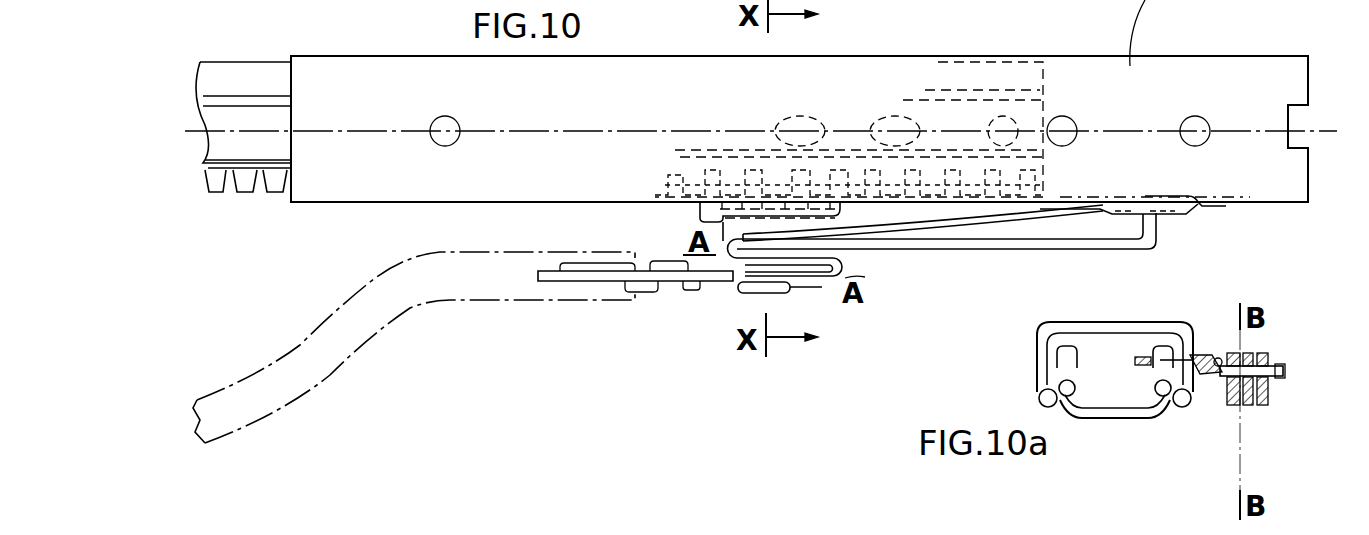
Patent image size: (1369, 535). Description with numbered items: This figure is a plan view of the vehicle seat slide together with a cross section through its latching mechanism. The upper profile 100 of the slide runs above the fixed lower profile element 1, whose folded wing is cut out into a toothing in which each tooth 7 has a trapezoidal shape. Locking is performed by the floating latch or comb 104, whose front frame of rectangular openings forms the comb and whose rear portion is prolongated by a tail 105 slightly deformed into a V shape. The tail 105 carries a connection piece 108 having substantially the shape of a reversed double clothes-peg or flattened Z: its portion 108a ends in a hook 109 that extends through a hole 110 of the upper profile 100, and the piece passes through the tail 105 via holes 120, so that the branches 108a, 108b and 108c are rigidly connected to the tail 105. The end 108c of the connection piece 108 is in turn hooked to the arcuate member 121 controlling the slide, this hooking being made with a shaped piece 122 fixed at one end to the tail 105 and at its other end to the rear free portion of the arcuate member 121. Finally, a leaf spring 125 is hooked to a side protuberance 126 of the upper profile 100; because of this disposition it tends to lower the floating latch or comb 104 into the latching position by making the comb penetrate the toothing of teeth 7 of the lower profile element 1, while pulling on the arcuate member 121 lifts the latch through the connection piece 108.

In FIG. 10, the fixed lower profile element 1 is at (253, 118).
In FIG. 10, the tooth 7 is at (250, 195).
In FIG. 10a, the upper profile 100 is at (1178, 322).
In FIG. 10, the floating latch or comb 104 is at (700, 213).
In FIG. 10a, the floating latch or comb 104 is at (1200, 355).
In FIG. 10, the tail 105 is at (825, 296).
In FIG. 10a, the tail 105 is at (1285, 371).
In FIG. 10, the connection piece 108 is at (1048, 248).
In FIG. 10a, the connection piece 108 is at (1225, 385).
In FIG. 10, the branch of connection piece 108a is at (1145, 241).
In FIG. 10, the branch of connection piece 108b is at (853, 266).
In FIG. 10a, the branch of connection piece 108b is at (1245, 405).
In FIG. 10, the end of connection piece 108c is at (740, 293).
In FIG. 10a, the end of connection piece 108c is at (1268, 400).
In FIG. 10, the hook 109 is at (1153, 197).
In FIG. 10, the hole 110 is at (1145, 210).
In FIG. 10a, the holes 120 is at (1222, 380).
In FIG. 10, the arcuate member 121 is at (323, 363).
In FIG. 10, the shaped piece 122 is at (693, 290).
In FIG. 10, the leaf spring 125 is at (965, 216).
In FIG. 10a, the leaf spring 125 is at (1232, 358).
In FIG. 10, the side protuberance 126 is at (1190, 220).